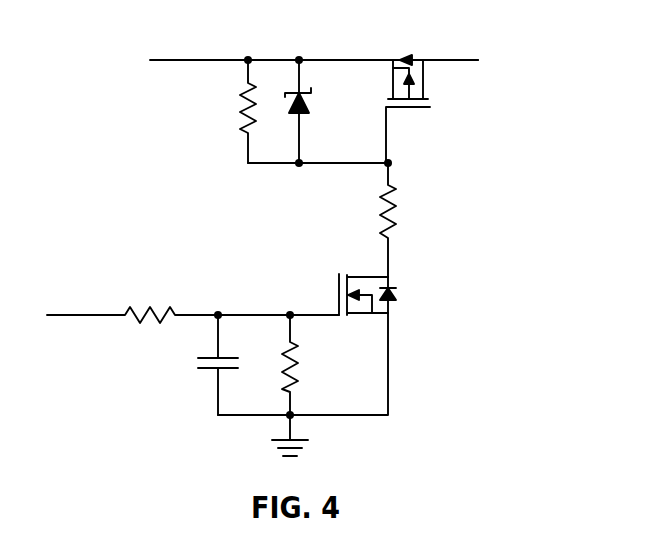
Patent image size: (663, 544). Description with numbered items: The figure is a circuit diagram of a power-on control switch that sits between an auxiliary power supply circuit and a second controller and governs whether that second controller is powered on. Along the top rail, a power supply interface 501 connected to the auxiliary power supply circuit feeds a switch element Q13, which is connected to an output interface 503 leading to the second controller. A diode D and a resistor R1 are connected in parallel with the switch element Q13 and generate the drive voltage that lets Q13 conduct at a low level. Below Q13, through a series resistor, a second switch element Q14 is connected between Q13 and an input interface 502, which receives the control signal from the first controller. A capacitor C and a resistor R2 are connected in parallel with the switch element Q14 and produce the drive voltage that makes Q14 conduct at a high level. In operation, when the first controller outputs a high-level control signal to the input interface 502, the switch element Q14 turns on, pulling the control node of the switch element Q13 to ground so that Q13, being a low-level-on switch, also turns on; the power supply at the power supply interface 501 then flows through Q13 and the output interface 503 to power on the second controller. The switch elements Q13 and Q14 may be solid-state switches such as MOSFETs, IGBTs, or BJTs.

The power supply interface 501 is at (314, 39).
The input interface 502 is at (193, 298).
The output interface 503 is at (487, 40).
The resistor R1 is at (220, 111).
The diode D is at (311, 111).
The switch element Q13 is at (443, 109).
The switch element Q14 is at (404, 297).
The capacitor C is at (198, 365).
The resistor R2 is at (312, 365).